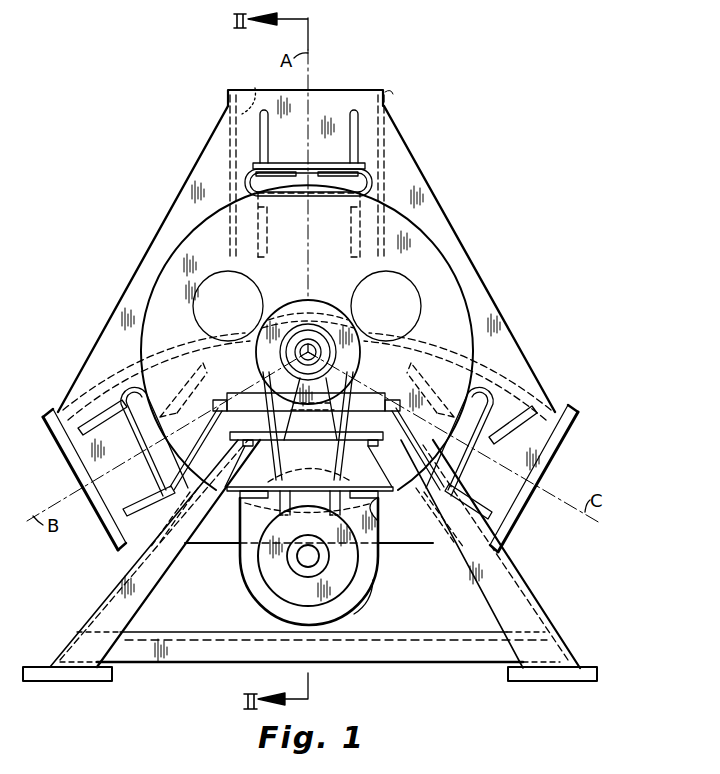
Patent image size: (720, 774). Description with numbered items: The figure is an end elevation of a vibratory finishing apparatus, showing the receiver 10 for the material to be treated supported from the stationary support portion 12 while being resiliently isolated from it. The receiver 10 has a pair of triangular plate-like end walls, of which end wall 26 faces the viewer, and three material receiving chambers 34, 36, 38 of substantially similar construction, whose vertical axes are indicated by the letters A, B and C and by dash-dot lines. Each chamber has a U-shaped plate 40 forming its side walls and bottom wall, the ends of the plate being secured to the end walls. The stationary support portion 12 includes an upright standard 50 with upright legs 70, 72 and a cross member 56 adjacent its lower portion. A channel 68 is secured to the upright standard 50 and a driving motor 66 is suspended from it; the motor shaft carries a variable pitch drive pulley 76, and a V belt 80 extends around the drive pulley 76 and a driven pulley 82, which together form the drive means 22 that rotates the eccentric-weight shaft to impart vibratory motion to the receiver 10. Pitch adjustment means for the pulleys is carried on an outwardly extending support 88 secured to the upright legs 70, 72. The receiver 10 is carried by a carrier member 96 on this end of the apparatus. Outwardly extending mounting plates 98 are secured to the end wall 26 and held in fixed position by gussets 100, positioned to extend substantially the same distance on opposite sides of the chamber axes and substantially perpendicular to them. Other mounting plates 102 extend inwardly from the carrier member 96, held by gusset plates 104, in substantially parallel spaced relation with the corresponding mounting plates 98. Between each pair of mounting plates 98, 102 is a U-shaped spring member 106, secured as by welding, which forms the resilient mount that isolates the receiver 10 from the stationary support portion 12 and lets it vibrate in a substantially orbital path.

The receiver 10 is at (476, 257).
The stationary support portion 12 is at (88, 588).
The drive means 22 is at (366, 569).
The end wall 26 is at (129, 289).
The material receiving chamber 34 is at (320, 84).
The material receiving chamber 36 is at (66, 471).
The material receiving chamber 38 is at (532, 514).
The U-shaped plate 40 is at (249, 91).
The upright standard 50 is at (520, 580).
The cross member 56 is at (409, 665).
The driving motor 66 is at (258, 598).
The channel 68 is at (376, 504).
The upright leg 70 is at (472, 590).
The upright leg 72 is at (163, 578).
The variable pitch drive pulley 76 is at (354, 596).
The V belt 80 is at (260, 388).
The driven pulley 82 is at (304, 300).
The outwardly extending support 88 is at (223, 513).
The carrier member 96 is at (464, 287).
The mounting plate 98 is at (253, 164).
The gusset 100 is at (352, 113).
The mounting plate 102 is at (331, 205).
The gusset plate 104 is at (354, 248).
The U-shaped spring member 106 is at (234, 176).